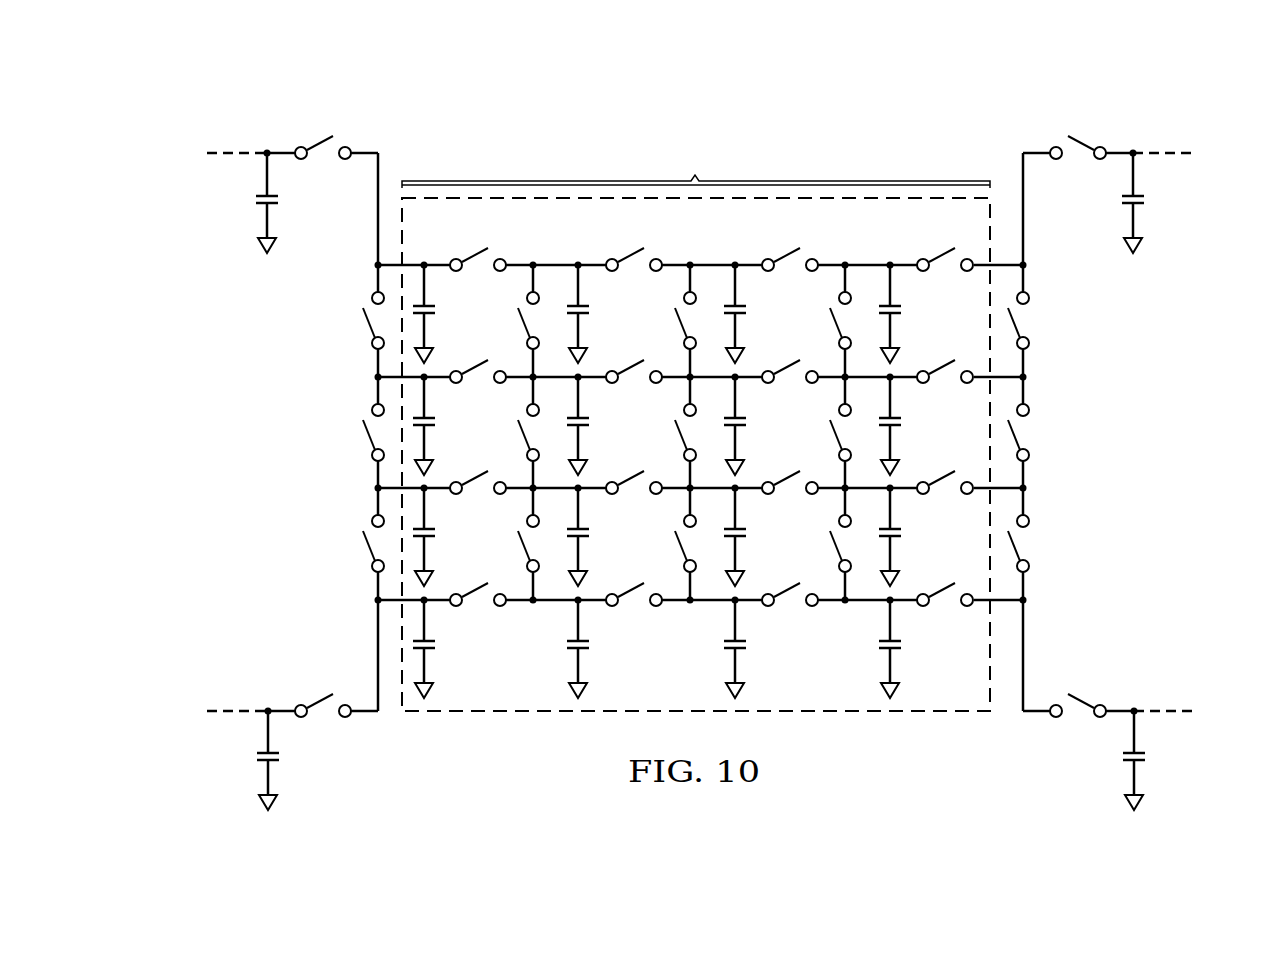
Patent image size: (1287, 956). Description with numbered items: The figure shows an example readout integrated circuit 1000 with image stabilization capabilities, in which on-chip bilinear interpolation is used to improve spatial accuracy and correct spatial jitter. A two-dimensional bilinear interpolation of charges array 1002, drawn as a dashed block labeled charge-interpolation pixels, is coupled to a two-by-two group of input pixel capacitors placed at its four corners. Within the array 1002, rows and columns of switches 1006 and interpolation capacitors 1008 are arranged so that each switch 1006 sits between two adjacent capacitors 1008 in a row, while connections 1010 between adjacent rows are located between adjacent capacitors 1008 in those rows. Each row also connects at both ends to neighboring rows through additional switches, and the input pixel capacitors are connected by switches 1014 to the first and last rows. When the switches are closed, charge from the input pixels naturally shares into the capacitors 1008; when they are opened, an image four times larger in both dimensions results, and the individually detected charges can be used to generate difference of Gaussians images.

The readout integrated circuit 1000 is at (938, 115).
The two-dimensional bilinear interpolation of charges array 1002 is at (696, 416).
The switches 1006 is at (800, 250).
The interpolation capacitors 1008 is at (437, 420).
The connections 1010 is at (842, 585).
The switches 1014 is at (1083, 698).